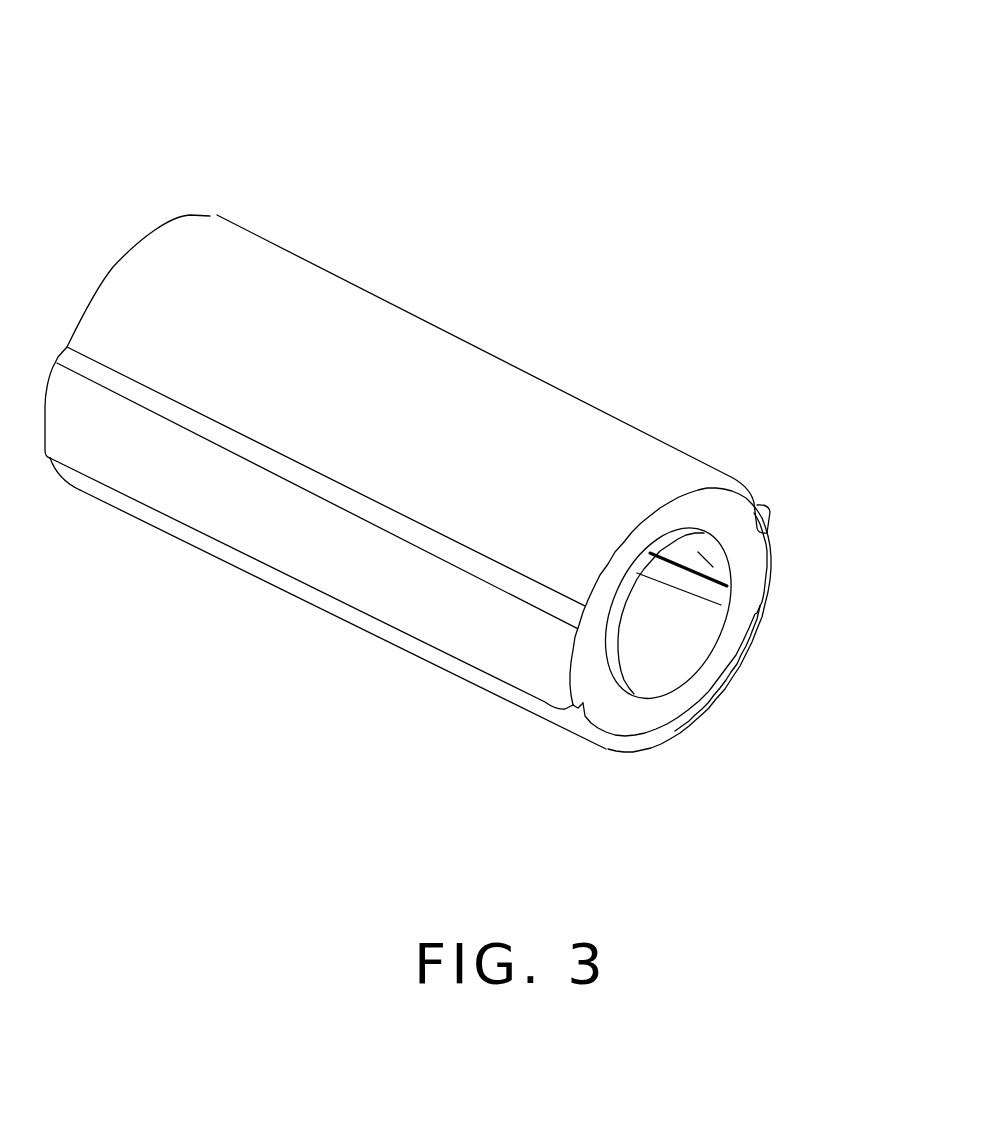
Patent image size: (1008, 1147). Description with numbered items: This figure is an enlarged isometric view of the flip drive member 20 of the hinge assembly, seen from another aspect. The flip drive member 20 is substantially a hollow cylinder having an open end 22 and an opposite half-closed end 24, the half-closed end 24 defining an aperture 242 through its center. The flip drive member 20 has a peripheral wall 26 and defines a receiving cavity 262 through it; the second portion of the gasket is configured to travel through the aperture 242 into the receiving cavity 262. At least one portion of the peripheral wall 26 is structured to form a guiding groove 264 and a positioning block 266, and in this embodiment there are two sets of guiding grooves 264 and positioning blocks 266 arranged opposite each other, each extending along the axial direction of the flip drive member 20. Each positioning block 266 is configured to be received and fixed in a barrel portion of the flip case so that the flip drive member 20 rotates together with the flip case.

The flip drive member 20 is at (492, 46).
The open end 22 is at (125, 254).
The half-closed end 24 is at (753, 557).
The peripheral wall 26 is at (368, 352).
The aperture 242 is at (711, 635).
The receiving cavity 262 is at (637, 632).
The guiding groove 264 is at (760, 608).
The positioning block 266 is at (395, 588).